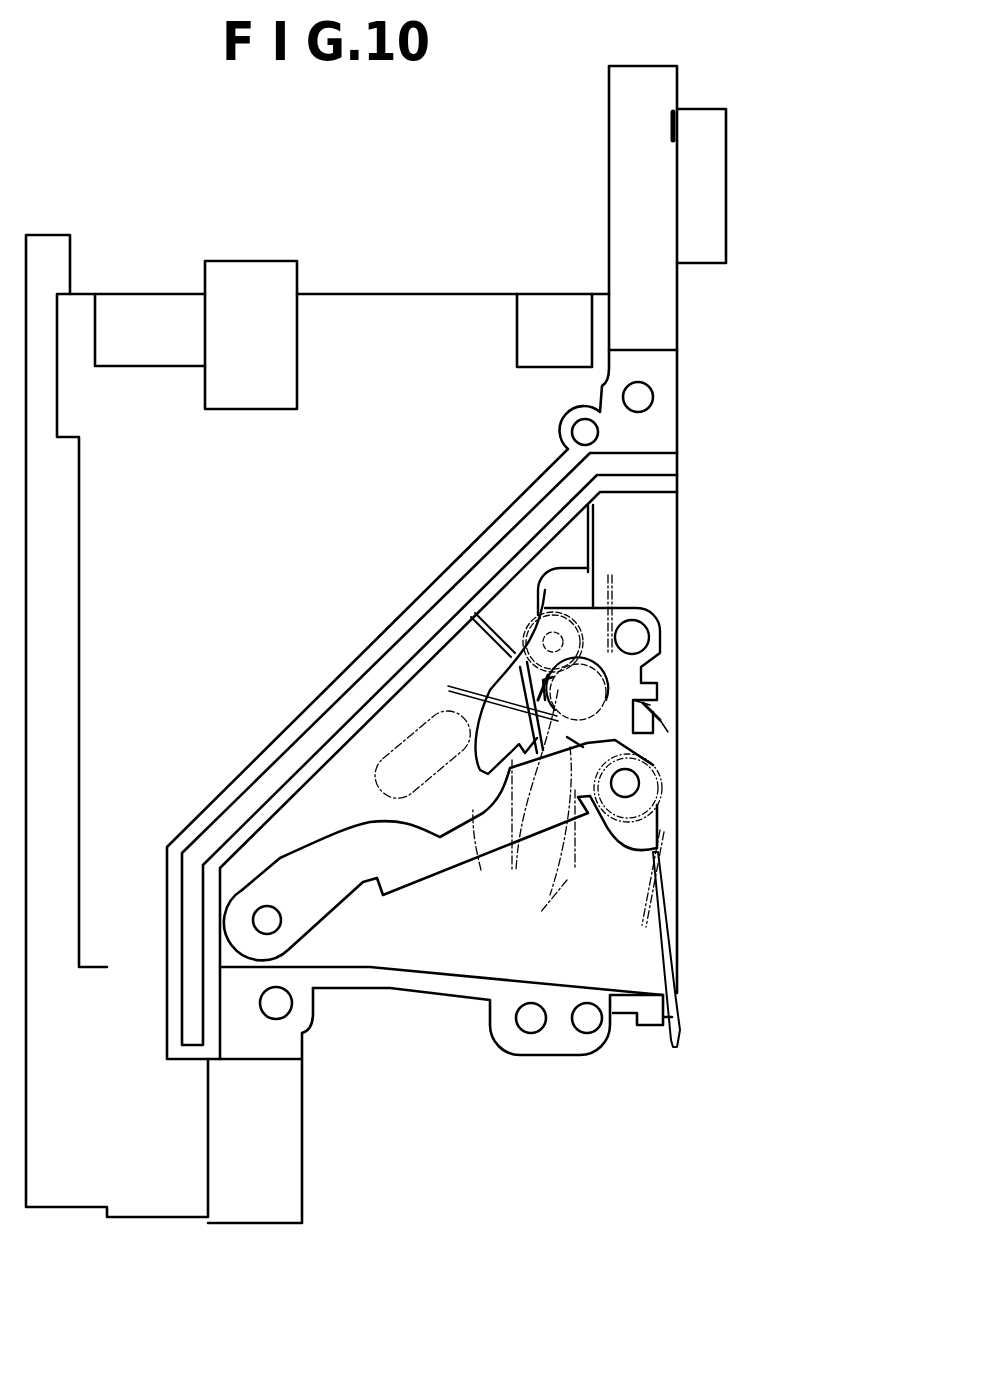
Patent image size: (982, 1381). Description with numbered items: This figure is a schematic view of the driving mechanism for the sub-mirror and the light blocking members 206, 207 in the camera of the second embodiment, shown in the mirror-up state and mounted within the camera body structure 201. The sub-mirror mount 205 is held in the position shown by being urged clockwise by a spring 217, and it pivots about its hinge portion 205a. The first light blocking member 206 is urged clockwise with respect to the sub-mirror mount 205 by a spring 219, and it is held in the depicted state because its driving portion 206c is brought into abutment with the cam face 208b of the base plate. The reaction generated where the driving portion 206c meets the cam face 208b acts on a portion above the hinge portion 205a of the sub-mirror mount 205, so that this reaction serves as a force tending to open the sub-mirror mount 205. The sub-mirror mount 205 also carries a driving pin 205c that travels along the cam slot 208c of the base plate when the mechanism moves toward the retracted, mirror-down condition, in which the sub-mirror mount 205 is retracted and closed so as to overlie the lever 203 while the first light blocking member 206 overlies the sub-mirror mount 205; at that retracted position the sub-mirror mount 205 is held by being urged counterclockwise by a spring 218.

The frame 201 is at (418, 293).
The lever 203 is at (428, 890).
The sub-mirror mount 205 is at (633, 607).
The hinge portion 205a is at (648, 787).
The driving pin 205c is at (650, 627).
The first light blocking member 206 is at (593, 525).
The driving portion 206c is at (481, 872).
The light blocking member 207 is at (667, 900).
The cam face 208b is at (400, 740).
The cam slot 208c is at (476, 840).
The spring 217 is at (612, 585).
The spring 218 is at (657, 848).
The spring 219 is at (497, 687).